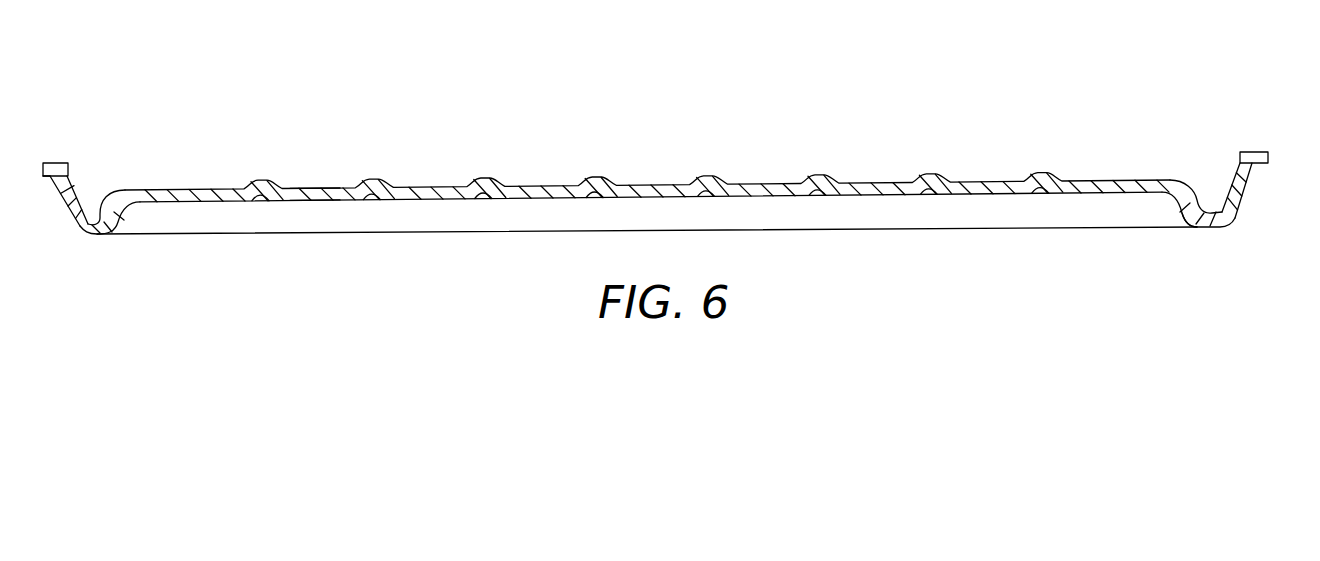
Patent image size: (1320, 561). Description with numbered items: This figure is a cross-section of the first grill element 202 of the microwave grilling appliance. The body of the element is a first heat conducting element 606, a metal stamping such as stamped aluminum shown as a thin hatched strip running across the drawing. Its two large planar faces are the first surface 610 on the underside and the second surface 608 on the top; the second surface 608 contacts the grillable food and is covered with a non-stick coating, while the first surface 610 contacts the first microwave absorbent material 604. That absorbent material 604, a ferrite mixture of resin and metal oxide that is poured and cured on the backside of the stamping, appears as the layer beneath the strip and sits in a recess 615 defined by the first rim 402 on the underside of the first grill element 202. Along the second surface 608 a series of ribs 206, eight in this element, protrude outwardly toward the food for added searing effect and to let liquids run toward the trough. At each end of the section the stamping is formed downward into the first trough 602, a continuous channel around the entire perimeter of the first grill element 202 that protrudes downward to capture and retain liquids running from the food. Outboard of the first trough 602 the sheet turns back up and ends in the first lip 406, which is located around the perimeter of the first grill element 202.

The first grill element 202 is at (862, 128).
The ribs 206 is at (710, 171).
The first rim 402 is at (97, 257).
The first lip 406 is at (52, 176).
The first trough 602 is at (100, 217).
The first microwave absorbent material 604 is at (1056, 211).
The first heat conducting element 606 is at (542, 192).
The second surface 608 is at (313, 188).
The first surface 610 is at (310, 203).
The recess 615 is at (1174, 210).